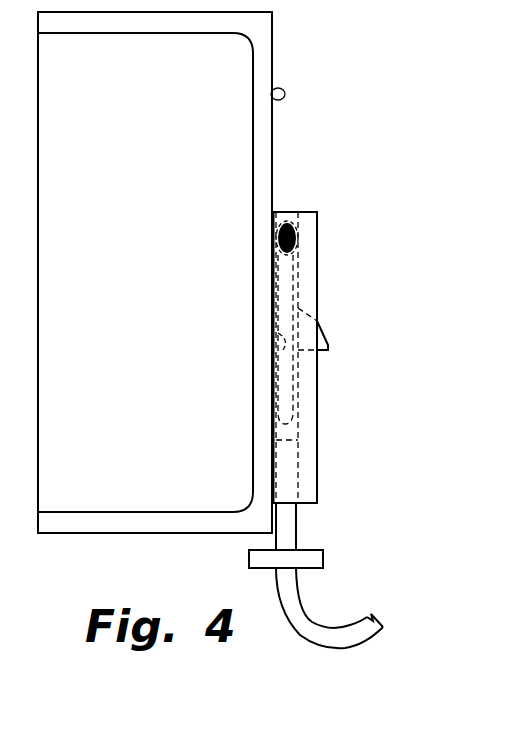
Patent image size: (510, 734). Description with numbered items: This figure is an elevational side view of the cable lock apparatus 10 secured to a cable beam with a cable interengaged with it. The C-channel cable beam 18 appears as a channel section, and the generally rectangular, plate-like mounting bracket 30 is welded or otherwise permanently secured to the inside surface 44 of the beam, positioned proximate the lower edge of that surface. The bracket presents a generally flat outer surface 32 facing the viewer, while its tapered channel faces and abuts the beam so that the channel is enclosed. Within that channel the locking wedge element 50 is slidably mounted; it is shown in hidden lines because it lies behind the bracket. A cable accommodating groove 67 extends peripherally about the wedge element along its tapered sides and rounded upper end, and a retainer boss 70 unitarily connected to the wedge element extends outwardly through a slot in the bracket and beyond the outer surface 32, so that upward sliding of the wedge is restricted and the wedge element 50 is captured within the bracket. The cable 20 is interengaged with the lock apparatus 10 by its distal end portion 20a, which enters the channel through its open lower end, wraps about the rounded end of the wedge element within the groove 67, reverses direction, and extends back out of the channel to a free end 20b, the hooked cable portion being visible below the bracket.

The cable lock apparatus 10 is at (352, 357).
The C-channel cable beam 18 is at (272, 33).
The cable 20 is at (323, 420).
The distal end portion 20a is at (336, 650).
The free end 20b is at (369, 616).
The mounting bracket 30 is at (318, 244).
The outer surface 32 is at (317, 457).
The inside surface 44 is at (284, 98).
The locking wedge element 50 is at (285, 432).
The cable accommodating groove 67 is at (276, 349).
The retainer boss 70 is at (330, 345).